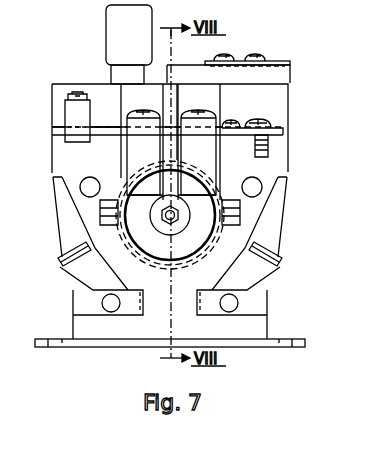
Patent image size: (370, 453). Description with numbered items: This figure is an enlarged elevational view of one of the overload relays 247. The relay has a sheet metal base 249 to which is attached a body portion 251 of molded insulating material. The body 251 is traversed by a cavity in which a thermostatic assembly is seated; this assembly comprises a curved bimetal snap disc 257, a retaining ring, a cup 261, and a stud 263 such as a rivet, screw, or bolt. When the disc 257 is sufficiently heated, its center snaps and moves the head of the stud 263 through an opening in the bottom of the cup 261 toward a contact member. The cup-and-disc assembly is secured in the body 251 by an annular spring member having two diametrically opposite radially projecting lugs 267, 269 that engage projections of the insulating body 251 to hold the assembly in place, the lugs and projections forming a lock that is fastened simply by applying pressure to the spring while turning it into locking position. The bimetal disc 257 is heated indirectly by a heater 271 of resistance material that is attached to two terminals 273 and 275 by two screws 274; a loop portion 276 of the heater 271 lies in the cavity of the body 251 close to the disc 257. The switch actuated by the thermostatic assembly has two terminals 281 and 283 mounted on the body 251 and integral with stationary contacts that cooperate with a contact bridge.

The overload relay 247 is at (279, 45).
The terminal 273 is at (96, 128).
The screws 274 is at (140, 106).
The terminal 275 is at (255, 122).
The heater 271 is at (118, 158).
The cup 261 is at (203, 155).
The bimetal snap disc 257 is at (120, 184).
The body portion 251 is at (248, 232).
The lug 267 is at (106, 226).
The lug 269 is at (233, 198).
The loop portion 276 is at (168, 224).
The stud 263 is at (178, 224).
The terminal 281 is at (83, 270).
The terminal 283 is at (257, 270).
The sheet metal base 249 is at (94, 340).